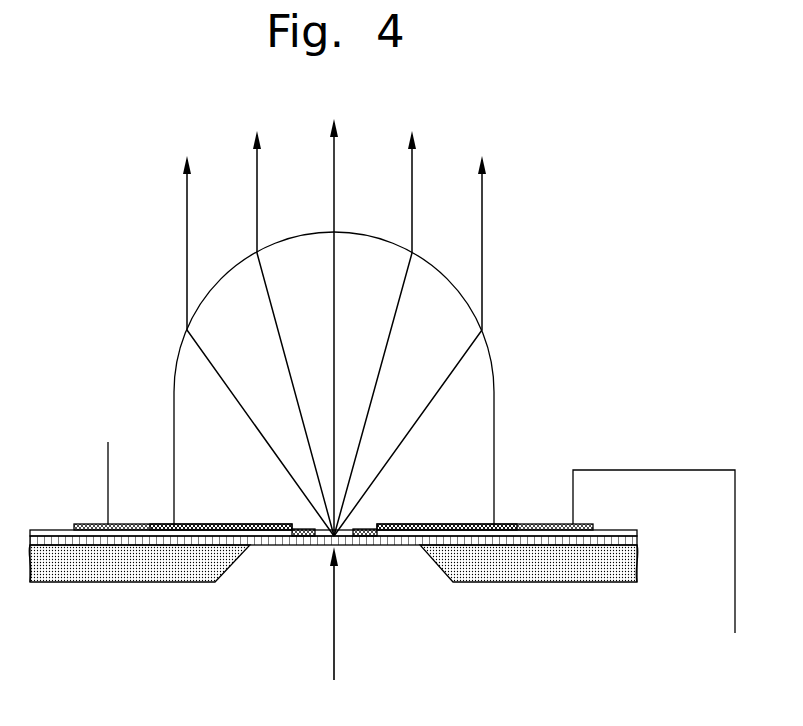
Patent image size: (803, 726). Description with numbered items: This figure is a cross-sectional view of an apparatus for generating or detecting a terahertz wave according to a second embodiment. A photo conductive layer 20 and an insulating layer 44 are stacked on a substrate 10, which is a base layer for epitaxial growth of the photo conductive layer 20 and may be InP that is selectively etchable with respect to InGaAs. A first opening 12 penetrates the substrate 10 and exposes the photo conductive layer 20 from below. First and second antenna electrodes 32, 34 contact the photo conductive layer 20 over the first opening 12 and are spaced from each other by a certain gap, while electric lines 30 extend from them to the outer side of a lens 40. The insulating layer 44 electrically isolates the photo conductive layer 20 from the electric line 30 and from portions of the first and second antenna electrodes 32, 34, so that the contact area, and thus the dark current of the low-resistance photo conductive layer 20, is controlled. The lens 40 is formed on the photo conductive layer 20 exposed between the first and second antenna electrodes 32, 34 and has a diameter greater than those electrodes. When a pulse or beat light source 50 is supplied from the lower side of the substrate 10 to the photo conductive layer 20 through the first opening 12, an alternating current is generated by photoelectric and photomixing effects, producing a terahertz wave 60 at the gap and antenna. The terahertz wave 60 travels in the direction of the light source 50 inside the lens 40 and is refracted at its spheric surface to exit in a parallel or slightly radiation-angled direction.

The substrate 10 is at (637, 566).
The first opening 12 is at (391, 537).
The photo conductive layer 20 is at (637, 540).
The electric line 30 is at (87, 523).
The first antenna electrode 32 is at (448, 523).
The second antenna electrode 34 is at (215, 523).
The lens 40 is at (480, 398).
The insulating layer 44 is at (633, 531).
The pulse or beat light source 50 is at (332, 629).
The terahertz wave 60 is at (483, 200).